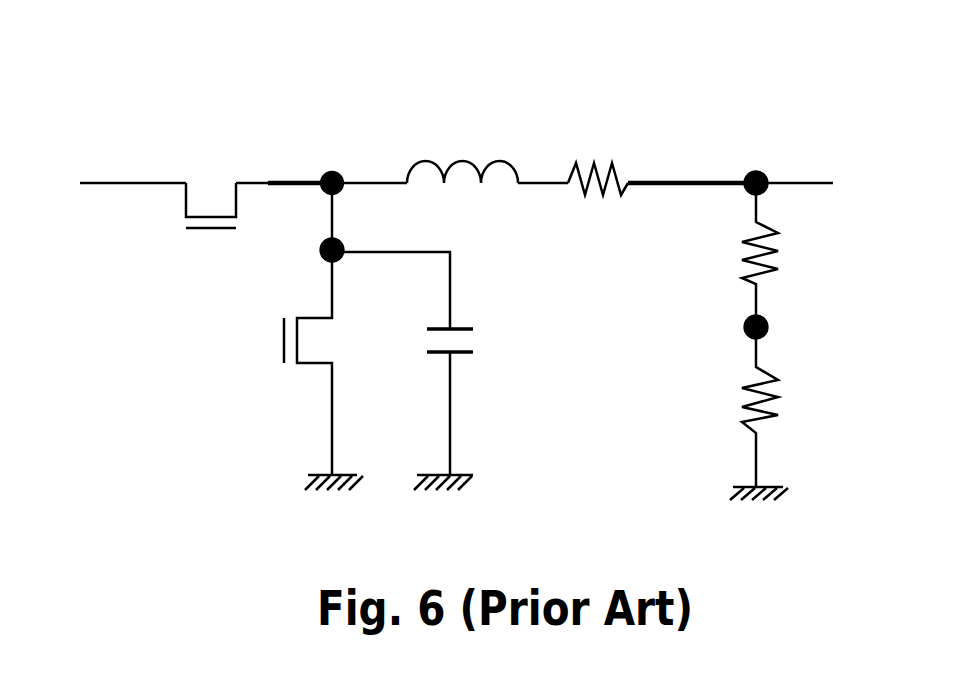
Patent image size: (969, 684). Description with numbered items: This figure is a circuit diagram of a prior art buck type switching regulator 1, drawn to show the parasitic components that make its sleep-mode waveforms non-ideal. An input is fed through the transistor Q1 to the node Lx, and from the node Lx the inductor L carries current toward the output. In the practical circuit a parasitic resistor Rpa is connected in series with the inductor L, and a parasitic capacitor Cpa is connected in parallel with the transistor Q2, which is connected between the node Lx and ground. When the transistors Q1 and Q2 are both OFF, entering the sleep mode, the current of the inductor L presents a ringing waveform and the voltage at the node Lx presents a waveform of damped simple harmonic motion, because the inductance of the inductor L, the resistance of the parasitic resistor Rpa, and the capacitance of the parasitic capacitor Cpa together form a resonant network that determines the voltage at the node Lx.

The prior art power amplifier output circuit 1 is at (715, 98).
The transistor Q1 is at (211, 187).
The transistor Q2 is at (330, 362).
The inductor L is at (462, 145).
The parasitic resistor Rpa is at (601, 151).
The parasitic capacitor Cpa is at (482, 345).
The node Lx is at (337, 166).